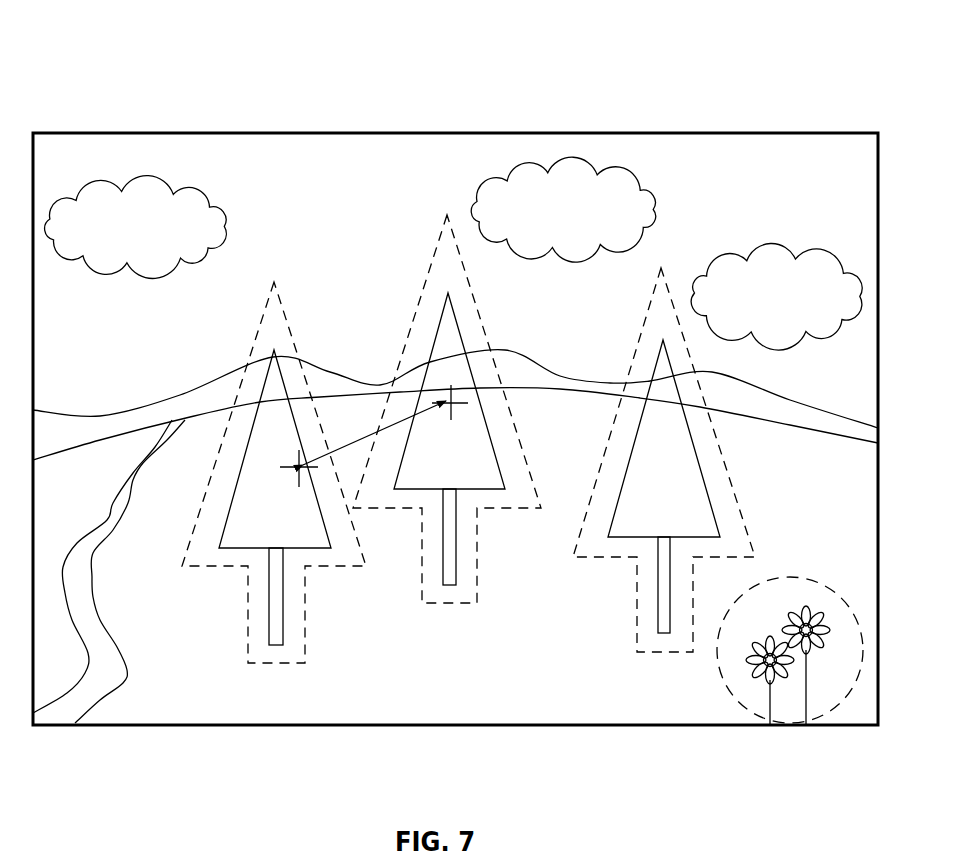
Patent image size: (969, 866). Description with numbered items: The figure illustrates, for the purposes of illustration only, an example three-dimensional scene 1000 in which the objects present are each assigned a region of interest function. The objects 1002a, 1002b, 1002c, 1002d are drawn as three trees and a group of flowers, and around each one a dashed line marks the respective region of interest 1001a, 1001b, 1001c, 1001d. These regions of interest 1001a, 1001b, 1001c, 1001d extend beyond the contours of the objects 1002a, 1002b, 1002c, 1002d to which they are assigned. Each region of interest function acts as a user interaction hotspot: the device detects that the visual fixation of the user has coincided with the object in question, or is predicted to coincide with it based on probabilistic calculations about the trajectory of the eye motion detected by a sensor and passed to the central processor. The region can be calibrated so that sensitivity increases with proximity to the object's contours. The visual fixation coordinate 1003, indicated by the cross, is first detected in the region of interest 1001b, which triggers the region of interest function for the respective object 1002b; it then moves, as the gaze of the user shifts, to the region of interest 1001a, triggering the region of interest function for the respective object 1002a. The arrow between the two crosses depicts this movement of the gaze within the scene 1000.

The 3D scene 1000 is at (633, 78).
The region of interest 1001a is at (258, 320).
The region of interest 1001b is at (422, 291).
The region of interest 1001c is at (641, 335).
The region of interest 1001d is at (800, 577).
The object 1002a is at (259, 393).
The object 1002b is at (491, 492).
The object 1002c is at (710, 502).
The object 1002d is at (830, 698).
The visual fixation coordinate 1003 is at (445, 398).